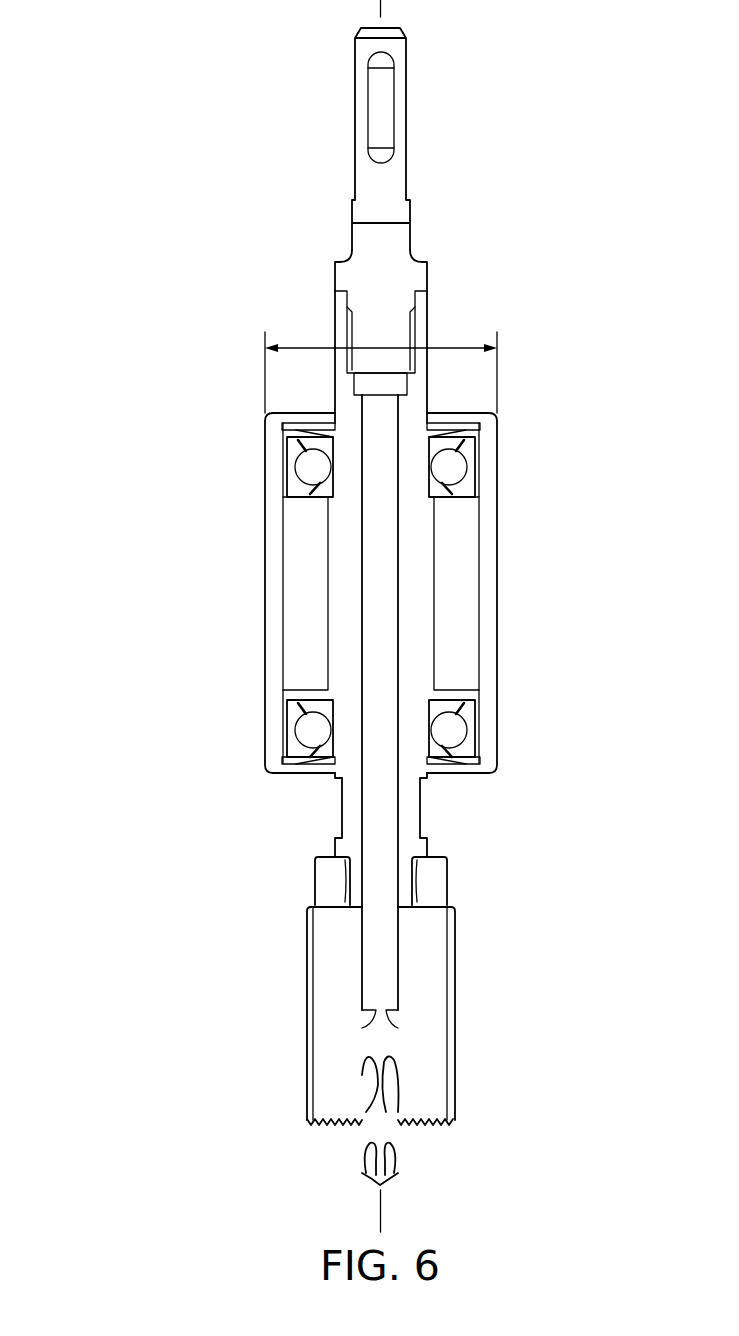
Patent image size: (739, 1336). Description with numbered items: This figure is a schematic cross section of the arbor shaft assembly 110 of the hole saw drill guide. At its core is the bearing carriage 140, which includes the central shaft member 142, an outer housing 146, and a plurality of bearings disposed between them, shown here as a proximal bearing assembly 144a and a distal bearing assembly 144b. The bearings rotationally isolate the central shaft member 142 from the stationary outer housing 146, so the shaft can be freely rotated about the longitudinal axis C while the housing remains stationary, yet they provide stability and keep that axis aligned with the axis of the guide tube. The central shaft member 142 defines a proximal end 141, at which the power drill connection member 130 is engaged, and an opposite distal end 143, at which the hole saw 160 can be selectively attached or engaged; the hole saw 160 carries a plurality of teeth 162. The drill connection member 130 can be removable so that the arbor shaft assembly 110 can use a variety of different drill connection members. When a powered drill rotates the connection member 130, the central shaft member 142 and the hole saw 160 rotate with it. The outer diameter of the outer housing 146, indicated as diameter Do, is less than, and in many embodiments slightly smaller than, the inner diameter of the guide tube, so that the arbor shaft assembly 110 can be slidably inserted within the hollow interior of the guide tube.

The arbor shaft assembly 110 is at (86, 146).
The power drill connection member 130 is at (400, 185).
The proximal end 141 is at (427, 291).
The outer diameter Do is at (307, 345).
The bearing carriage 140 is at (172, 463).
The outer housing 146 is at (498, 593).
The proximal bearing assembly 144a is at (449, 463).
The distal bearing assembly 144b is at (452, 732).
The central shaft member 142 is at (420, 813).
The distal end 143 is at (405, 887).
The hole saw 160 is at (416, 1047).
The teeth 162 is at (335, 1125).